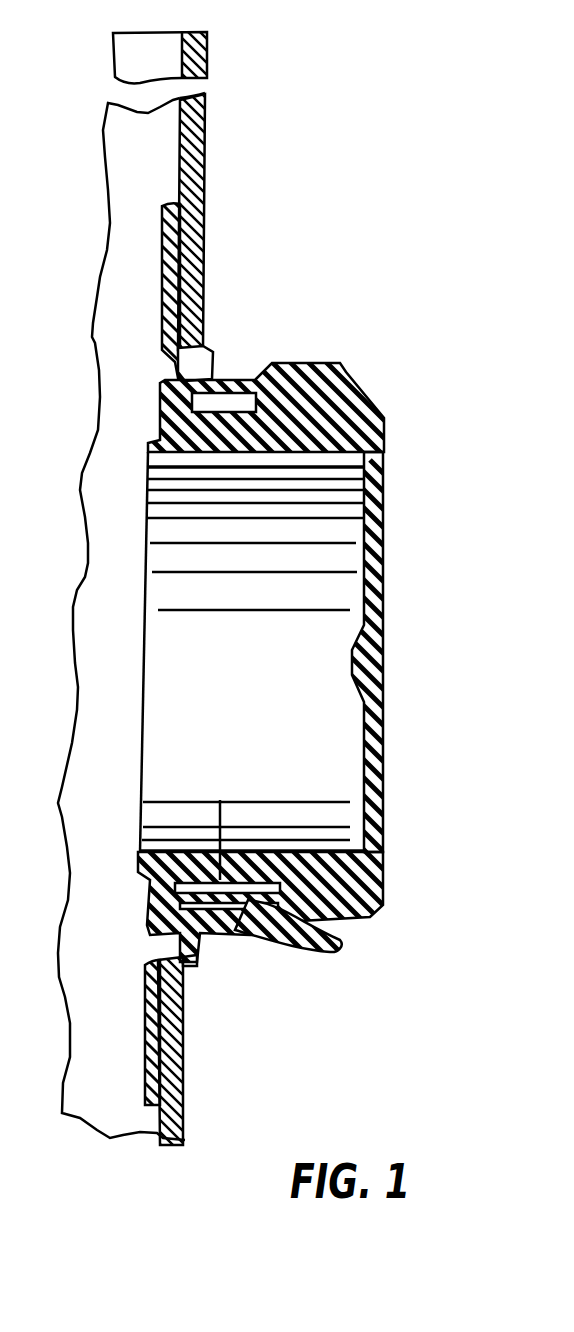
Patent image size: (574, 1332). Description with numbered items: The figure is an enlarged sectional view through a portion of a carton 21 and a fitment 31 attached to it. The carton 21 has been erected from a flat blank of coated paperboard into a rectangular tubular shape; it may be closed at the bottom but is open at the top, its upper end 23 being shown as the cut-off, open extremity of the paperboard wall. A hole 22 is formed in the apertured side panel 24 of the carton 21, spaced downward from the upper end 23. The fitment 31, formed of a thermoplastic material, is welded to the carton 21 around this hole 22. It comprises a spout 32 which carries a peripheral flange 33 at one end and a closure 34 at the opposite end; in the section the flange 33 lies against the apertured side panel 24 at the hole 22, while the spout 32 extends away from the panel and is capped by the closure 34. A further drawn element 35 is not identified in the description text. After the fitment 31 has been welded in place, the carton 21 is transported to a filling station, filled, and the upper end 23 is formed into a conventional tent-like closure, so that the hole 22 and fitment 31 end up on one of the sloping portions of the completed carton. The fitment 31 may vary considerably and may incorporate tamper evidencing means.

The carton 21 is at (235, 620).
The hole 22 is at (210, 350).
The upper end 23 is at (205, 34).
The apertured side panel 24 is at (205, 228).
The fitment 31 is at (383, 418).
The spout 32 is at (220, 800).
The peripheral flange 33 is at (162, 310).
The closure 34 is at (383, 508).
The snap tongue 35 is at (228, 950).